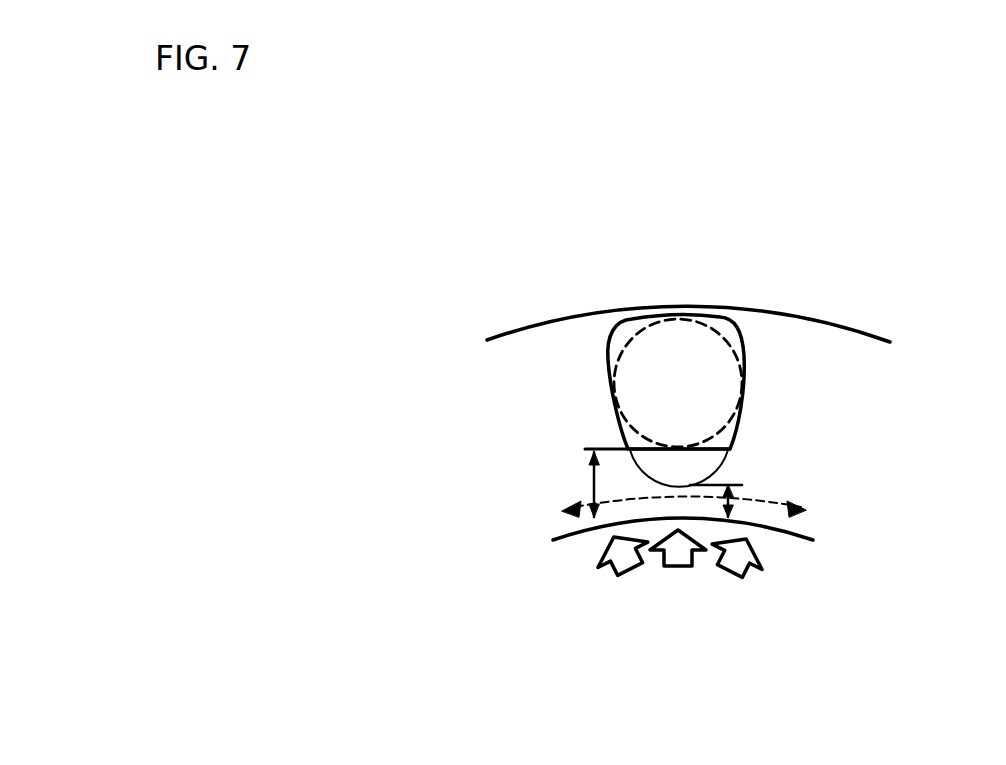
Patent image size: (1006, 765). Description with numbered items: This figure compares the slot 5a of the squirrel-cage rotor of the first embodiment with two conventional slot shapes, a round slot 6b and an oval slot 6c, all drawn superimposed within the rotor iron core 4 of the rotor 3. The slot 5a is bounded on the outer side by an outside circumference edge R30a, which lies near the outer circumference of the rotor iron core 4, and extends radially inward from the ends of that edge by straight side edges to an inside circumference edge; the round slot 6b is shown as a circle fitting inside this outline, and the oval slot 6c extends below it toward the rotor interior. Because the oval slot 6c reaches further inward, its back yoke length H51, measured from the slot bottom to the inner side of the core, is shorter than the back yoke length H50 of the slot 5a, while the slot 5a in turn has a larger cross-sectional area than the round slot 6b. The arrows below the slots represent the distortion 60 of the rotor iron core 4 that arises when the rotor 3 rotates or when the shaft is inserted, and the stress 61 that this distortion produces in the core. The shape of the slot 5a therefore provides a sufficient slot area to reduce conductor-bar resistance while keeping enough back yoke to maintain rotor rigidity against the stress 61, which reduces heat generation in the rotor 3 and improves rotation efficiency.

The rotor 3 is at (862, 285).
The rotor iron core 4 is at (510, 335).
The slot 5a is at (614, 318).
The outside circumference edge R30a is at (723, 318).
The round slot 6b is at (745, 347).
The oval slot 6c is at (725, 467).
The back yoke length H50 is at (593, 488).
The back yoke length H51 is at (737, 493).
The stress 61 is at (806, 508).
The distortion 60 is at (685, 567).